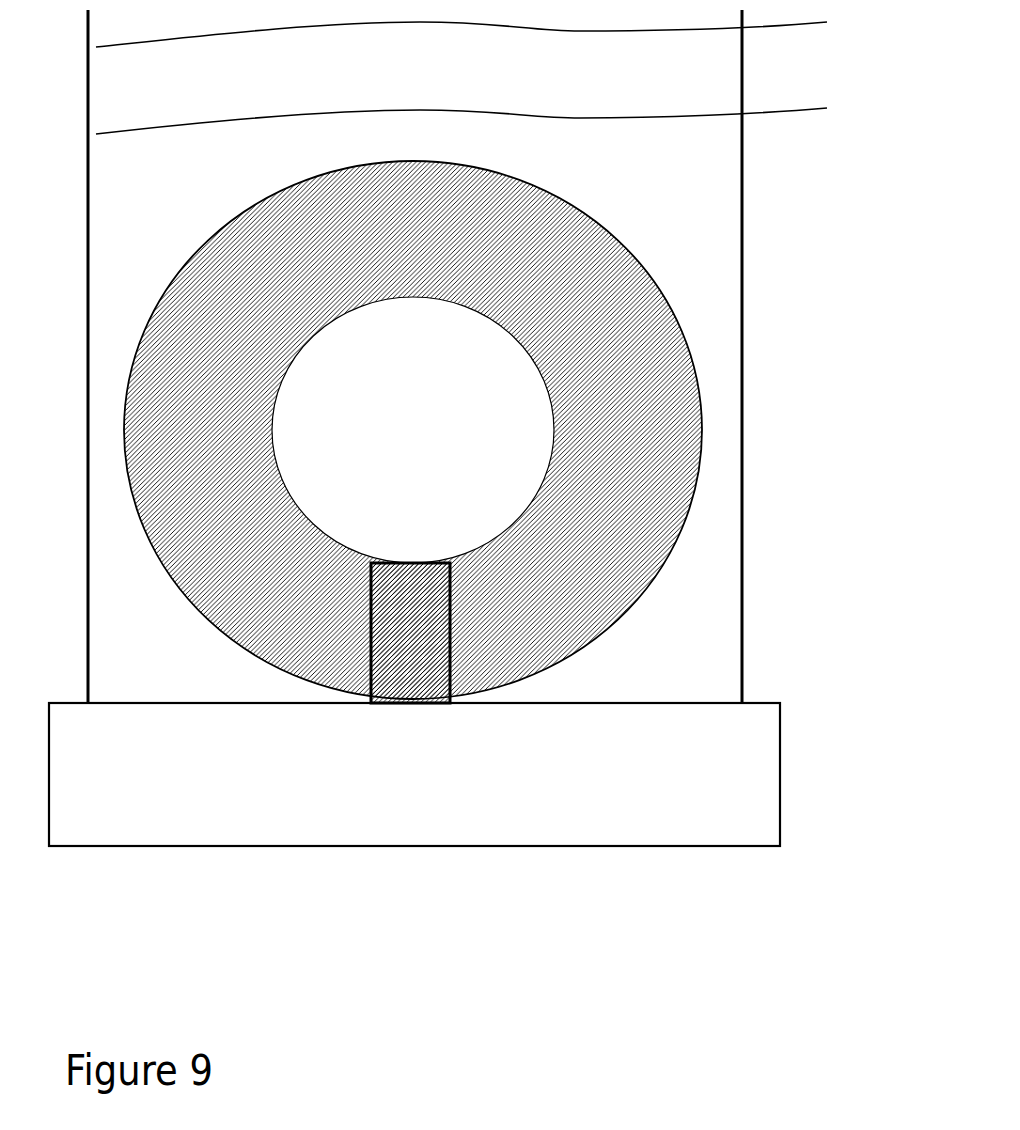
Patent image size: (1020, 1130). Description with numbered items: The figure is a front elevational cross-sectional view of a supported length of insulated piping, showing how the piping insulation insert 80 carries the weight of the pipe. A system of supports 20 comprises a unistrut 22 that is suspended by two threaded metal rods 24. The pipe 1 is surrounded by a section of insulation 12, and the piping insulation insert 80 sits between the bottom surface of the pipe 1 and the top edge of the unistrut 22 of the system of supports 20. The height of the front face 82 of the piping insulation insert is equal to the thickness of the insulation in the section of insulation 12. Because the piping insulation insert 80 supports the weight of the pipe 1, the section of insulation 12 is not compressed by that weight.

The pipe 1 is at (490, 460).
The section of insulation 12 is at (602, 315).
The system of supports 20 is at (755, 79).
The unistrut 22 is at (670, 766).
The threaded metal rods 24 is at (755, 156).
The piping insulation insert 80 is at (452, 652).
The front face 82 is at (415, 628).